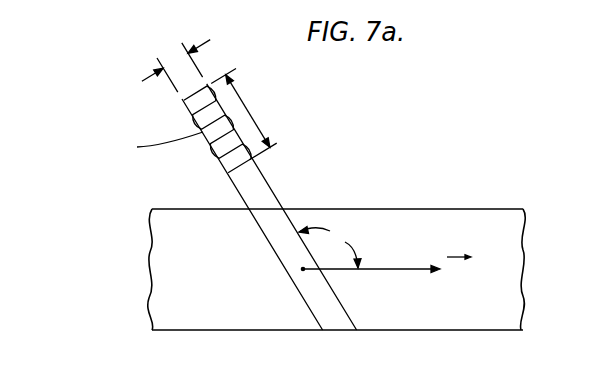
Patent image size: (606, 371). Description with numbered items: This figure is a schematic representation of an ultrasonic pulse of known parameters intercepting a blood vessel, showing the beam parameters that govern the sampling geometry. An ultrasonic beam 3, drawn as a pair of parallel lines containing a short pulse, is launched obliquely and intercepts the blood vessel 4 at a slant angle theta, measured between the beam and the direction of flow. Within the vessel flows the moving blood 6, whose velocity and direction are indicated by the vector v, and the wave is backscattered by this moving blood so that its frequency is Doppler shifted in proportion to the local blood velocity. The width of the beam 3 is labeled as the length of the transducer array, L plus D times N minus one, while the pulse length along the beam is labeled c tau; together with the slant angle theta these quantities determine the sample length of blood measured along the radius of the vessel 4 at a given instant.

The ultrasonic beam 3 is at (228, 172).
The blood vessel 4 is at (440, 209).
The moving blood 6 is at (177, 293).